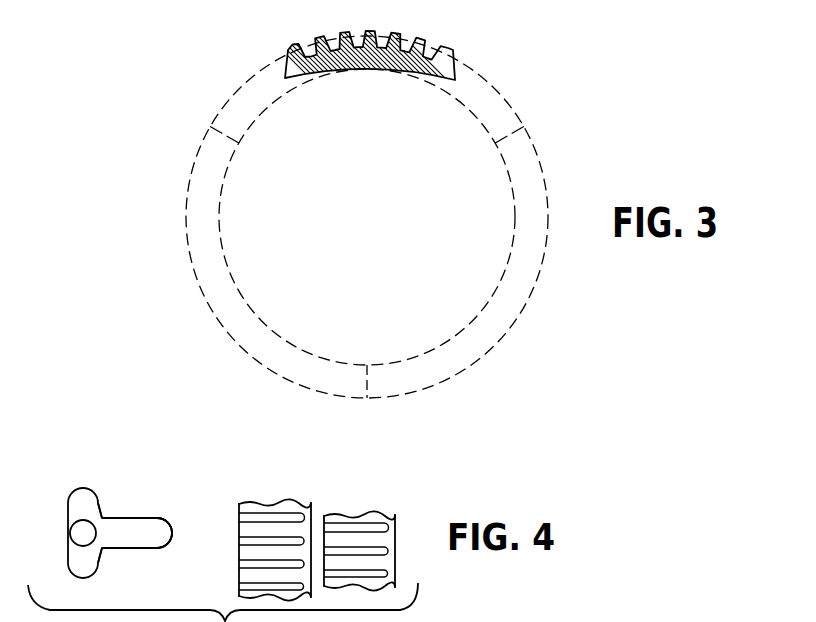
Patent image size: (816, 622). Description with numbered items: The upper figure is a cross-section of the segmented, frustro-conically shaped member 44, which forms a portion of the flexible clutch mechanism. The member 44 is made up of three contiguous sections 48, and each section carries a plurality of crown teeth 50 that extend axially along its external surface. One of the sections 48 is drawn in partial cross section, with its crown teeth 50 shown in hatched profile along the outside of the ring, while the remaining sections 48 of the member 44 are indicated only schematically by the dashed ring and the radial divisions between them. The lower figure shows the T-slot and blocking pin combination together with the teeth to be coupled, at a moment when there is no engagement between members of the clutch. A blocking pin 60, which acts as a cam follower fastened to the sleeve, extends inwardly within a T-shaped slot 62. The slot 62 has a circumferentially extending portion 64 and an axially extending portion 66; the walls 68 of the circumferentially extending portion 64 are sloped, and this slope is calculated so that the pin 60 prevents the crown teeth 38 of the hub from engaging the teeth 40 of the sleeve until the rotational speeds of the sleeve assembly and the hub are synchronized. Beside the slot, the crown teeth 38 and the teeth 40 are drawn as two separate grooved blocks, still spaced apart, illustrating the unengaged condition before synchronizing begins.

In FIG. 3, the member 44 is at (497, 85).
In FIG. 3, the contiguous sections 48 is at (380, 68).
In FIG. 3, the crown teeth 50 is at (428, 49).
In FIG. 4, the blocking pin 60 is at (71, 533).
In FIG. 4, the T-shaped slot 62 is at (145, 517).
In FIG. 4, the circumferentially extending portion 64 is at (85, 496).
In FIG. 4, the axially extending portion 66 is at (150, 540).
In FIG. 4, the walls 68 is at (104, 503).
In FIG. 4, the teeth 40 is at (290, 513).
In FIG. 4, the crown teeth 38 is at (374, 524).